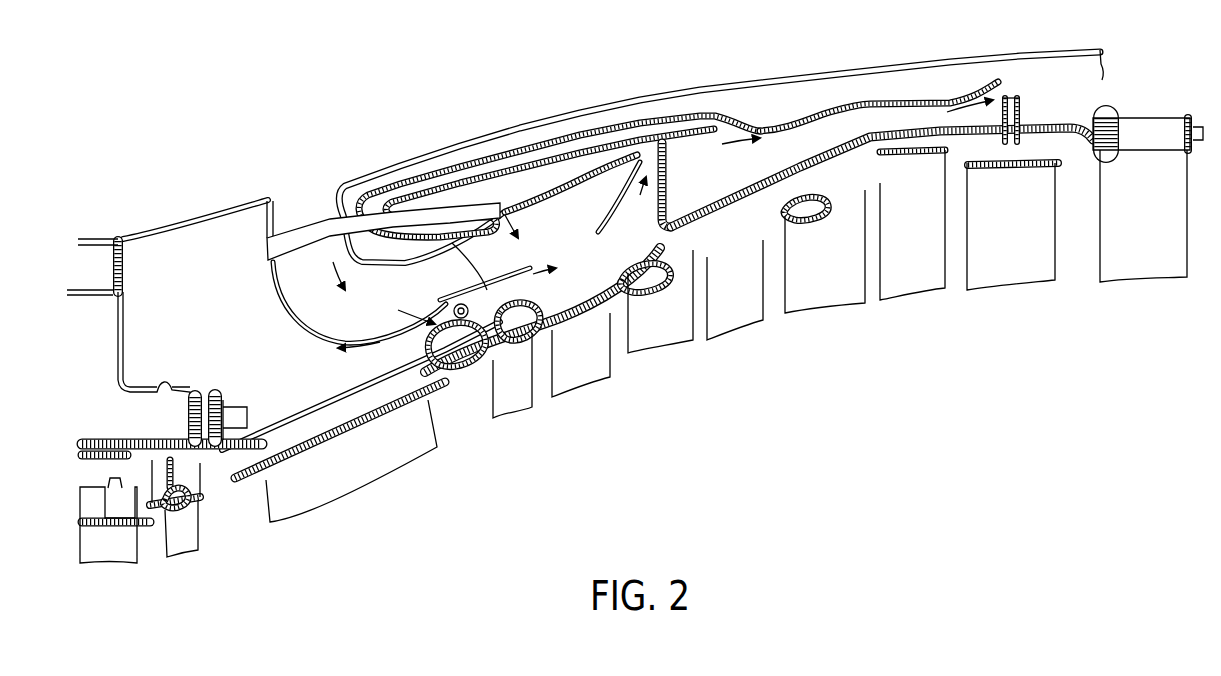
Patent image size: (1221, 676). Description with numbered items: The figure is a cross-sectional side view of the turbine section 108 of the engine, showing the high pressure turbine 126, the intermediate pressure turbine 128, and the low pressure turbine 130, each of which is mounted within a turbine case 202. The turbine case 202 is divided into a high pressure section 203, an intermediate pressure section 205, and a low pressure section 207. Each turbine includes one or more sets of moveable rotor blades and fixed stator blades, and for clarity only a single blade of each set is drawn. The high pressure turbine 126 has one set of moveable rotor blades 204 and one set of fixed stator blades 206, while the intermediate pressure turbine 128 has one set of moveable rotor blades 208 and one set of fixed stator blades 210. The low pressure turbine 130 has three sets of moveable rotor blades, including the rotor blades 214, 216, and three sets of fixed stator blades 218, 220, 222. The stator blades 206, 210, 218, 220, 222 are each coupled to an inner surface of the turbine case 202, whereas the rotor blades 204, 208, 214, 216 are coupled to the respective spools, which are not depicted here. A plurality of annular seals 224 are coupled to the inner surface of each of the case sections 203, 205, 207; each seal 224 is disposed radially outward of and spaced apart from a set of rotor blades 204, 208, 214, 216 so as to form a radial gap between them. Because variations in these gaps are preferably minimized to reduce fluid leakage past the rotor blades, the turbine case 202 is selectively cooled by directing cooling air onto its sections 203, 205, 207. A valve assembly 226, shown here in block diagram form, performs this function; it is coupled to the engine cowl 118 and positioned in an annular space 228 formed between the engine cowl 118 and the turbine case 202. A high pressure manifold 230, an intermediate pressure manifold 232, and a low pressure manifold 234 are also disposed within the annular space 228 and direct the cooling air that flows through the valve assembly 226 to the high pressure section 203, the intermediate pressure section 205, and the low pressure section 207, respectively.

The turbine section 108 is at (389, 120).
The engine cowl 118 is at (618, 102).
The high pressure turbine 126 is at (297, 526).
The intermediate pressure turbine 128 is at (545, 406).
The low pressure turbine 130 is at (873, 318).
The turbine case 202 is at (1036, 102).
The high pressure section 203 is at (283, 427).
The moveable rotor blades 204 is at (194, 548).
The intermediate pressure section 205 is at (560, 247).
The fixed stator blades 206 is at (360, 487).
The low pressure section 207 is at (733, 205).
The moveable rotor blades 208 is at (493, 420).
The fixed stator blades 210 is at (590, 377).
The moveable rotor blades 214 is at (660, 355).
The moveable rotor blades 216 is at (1000, 290).
The fixed stator blades 218 is at (735, 340).
The fixed stator blades 220 is at (910, 292).
The fixed stator blades 222 is at (1140, 282).
The annular seals 224 is at (162, 510).
The valve assembly 226 is at (320, 228).
The annular space 228 is at (748, 112).
The high pressure manifold 230 is at (273, 290).
The intermediate pressure manifold 232 is at (496, 214).
The low pressure manifold 234 is at (788, 112).